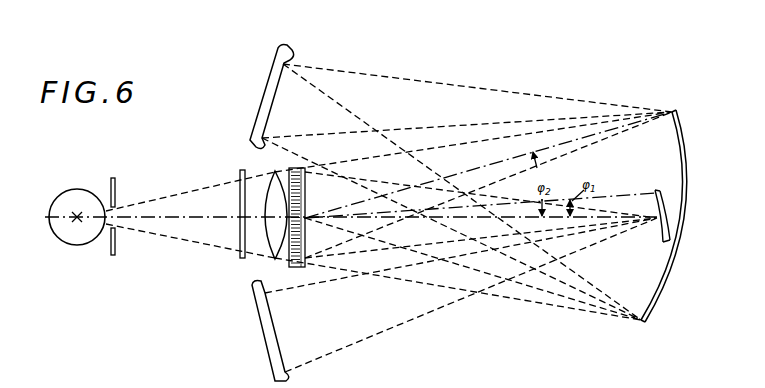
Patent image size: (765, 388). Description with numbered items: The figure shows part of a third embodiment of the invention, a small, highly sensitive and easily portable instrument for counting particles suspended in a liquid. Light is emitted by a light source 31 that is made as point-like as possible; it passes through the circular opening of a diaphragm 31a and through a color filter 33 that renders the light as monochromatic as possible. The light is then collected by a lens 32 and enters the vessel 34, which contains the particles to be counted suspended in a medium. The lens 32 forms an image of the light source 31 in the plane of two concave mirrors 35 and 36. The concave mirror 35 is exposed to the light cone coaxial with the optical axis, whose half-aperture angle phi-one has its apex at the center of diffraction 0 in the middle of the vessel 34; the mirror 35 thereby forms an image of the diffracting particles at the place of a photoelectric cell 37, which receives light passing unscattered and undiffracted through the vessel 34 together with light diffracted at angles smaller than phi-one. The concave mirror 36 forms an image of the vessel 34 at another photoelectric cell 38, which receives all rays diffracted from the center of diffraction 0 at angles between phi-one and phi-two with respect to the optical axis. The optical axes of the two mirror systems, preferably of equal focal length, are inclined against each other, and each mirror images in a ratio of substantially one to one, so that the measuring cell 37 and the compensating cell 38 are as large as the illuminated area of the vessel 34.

The light source 31 is at (65, 195).
The diaphragm 31a is at (116, 185).
The lens 32 is at (273, 250).
The color filter 33 is at (240, 258).
The vessel 34 is at (300, 258).
The center of diffraction 0 is at (301, 216).
The concave mirror 35 is at (660, 191).
The concave mirror 36 is at (678, 217).
The photoelectric cell 37 is at (258, 332).
The photoelectric cell 38 is at (267, 87).